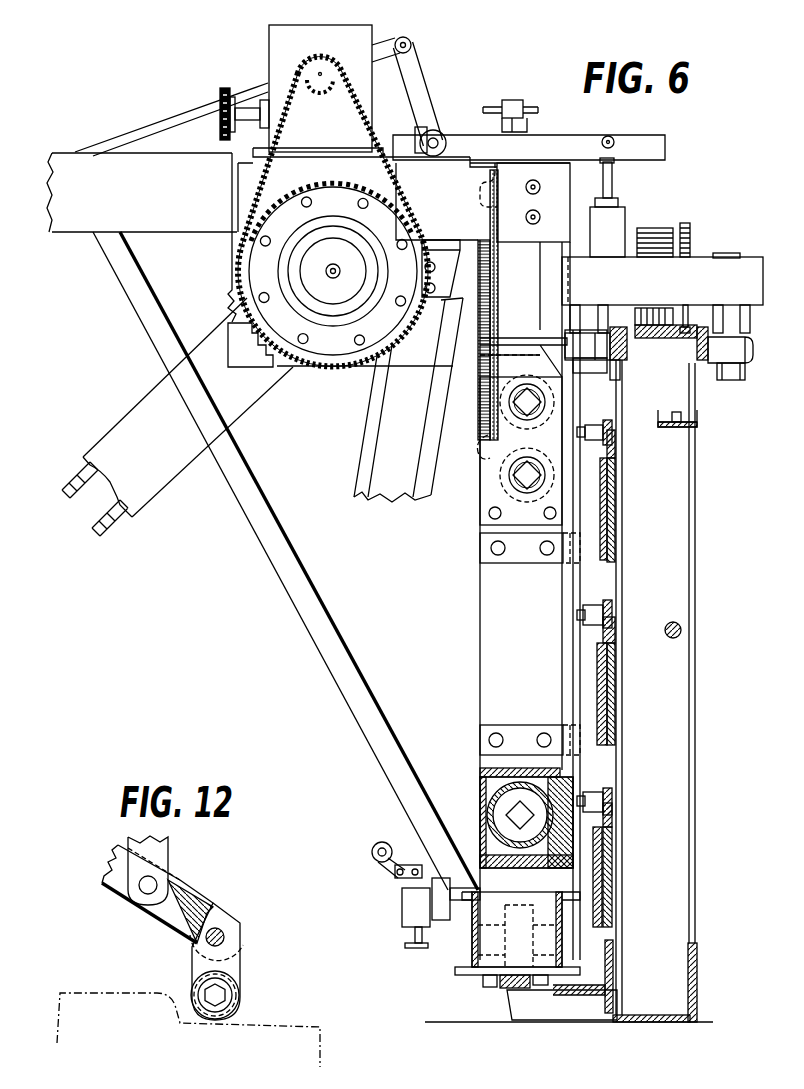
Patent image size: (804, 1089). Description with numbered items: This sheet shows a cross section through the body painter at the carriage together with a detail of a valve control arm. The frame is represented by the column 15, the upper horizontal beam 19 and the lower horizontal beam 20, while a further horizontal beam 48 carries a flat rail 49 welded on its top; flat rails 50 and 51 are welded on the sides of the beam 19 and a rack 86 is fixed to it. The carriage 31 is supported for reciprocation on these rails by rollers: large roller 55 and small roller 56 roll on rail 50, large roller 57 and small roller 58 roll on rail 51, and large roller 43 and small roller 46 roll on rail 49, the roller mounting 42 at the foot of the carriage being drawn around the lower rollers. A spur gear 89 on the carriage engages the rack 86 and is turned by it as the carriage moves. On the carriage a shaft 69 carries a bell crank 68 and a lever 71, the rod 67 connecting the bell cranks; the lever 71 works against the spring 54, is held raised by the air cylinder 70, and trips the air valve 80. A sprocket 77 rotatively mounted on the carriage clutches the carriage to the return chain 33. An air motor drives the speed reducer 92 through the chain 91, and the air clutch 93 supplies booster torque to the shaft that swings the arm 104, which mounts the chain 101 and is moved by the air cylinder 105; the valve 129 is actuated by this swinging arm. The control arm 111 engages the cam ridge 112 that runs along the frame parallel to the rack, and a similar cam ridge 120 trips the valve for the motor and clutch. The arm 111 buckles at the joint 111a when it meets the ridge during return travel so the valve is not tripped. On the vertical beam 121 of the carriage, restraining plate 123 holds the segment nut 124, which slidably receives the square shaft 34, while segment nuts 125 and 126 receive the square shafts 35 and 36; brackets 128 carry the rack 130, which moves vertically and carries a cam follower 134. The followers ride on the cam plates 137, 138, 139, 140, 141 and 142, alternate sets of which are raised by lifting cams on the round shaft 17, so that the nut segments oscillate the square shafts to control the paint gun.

In FIG. 6, the column 15 is at (697, 580).
In FIG. 6, the round shaft 17 is at (681, 630).
In FIG. 6, the horizontal beam 19 is at (630, 310).
In FIG. 6, the lower horizontal beam 20 is at (697, 953).
In FIG. 6, the carriage 31 is at (291, 105).
In FIG. 6, the chain 33 is at (695, 322).
In FIG. 6, the square shaft 34 is at (507, 815).
In FIG. 6, the square shaft 35 is at (535, 498).
In FIG. 6, the square shaft 36 is at (527, 420).
In FIG. 6, the housing 42 is at (577, 890).
In FIG. 6, the large roller 43 is at (540, 918).
In FIG. 6, the small roller 46 is at (483, 980).
In FIG. 6, the horizontal beam 48 is at (510, 1007).
In FIG. 6, the flat rail 49 is at (507, 987).
In FIG. 6, the flat rail 50 is at (627, 348).
In FIG. 6, the flat rail 51 is at (697, 350).
In FIG. 6, the spring 54 is at (477, 242).
In FIG. 6, the large roller 55 is at (565, 343).
In FIG. 6, the small roller 56 is at (618, 377).
In FIG. 6, the large roller 57 is at (753, 340).
In FIG. 6, the small roller 58 is at (707, 382).
In FIG. 6, the rod 67 is at (203, 97).
In FIG. 6, the bell crank 68 is at (423, 95).
In FIG. 6, the shaft 69 is at (435, 142).
In FIG. 6, the air cylinder 70 is at (620, 217).
In FIG. 6, the lever 71 is at (567, 138).
In FIG. 6, the sprocket 77 is at (692, 242).
In FIG. 6, the air valve 80 is at (520, 90).
In FIG. 6, the rack 86 is at (660, 317).
In FIG. 6, the spur gear 89 is at (668, 228).
In FIG. 6, the chain 91 is at (220, 120).
In FIG. 6, the speed reducer 92 is at (367, 97).
In FIG. 6, the air clutch 93 is at (333, 212).
In FIG. 6, the chain 101 is at (77, 482).
In FIG. 6, the arm 104 is at (213, 327).
In FIG. 6, the air cylinder 105 is at (390, 407).
In FIG. 12, the control arm 111 is at (177, 880).
In FIG. 12, the joint 111a is at (225, 940).
In FIG. 6, the cam ridge 112 is at (700, 330).
In FIG. 12, the cam ridge 112 is at (80, 993).
In FIG. 6, the cam ridge 120 is at (620, 308).
In FIG. 6, the vertical beam 121 is at (497, 592).
In FIG. 6, the restraining plate 123 is at (510, 782).
In FIG. 6, the segment nut 124 is at (497, 805).
In FIG. 6, the segment nut 125 is at (507, 477).
In FIG. 6, the segment nut 126 is at (488, 403).
In FIG. 6, the bracket 128 is at (582, 566).
In FIG. 6, the valve 129 is at (408, 898).
In FIG. 6, the rack 130 is at (572, 575).
In FIG. 6, the cam follower 134 is at (600, 420).
In FIG. 6, the cam plate 137 is at (600, 848).
In FIG. 6, the cam plate 138 is at (608, 820).
In FIG. 6, the cam plate 139 is at (600, 662).
In FIG. 6, the cam plate 140 is at (605, 637).
In FIG. 6, the cam plate 141 is at (603, 478).
In FIG. 6, the cam plate 142 is at (615, 452).